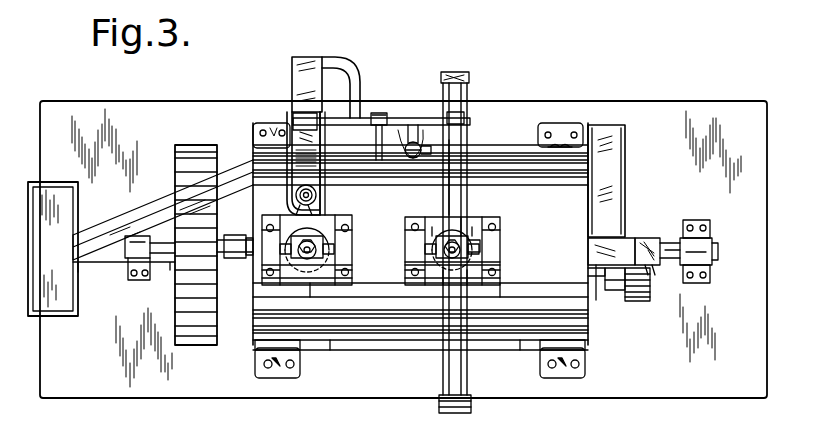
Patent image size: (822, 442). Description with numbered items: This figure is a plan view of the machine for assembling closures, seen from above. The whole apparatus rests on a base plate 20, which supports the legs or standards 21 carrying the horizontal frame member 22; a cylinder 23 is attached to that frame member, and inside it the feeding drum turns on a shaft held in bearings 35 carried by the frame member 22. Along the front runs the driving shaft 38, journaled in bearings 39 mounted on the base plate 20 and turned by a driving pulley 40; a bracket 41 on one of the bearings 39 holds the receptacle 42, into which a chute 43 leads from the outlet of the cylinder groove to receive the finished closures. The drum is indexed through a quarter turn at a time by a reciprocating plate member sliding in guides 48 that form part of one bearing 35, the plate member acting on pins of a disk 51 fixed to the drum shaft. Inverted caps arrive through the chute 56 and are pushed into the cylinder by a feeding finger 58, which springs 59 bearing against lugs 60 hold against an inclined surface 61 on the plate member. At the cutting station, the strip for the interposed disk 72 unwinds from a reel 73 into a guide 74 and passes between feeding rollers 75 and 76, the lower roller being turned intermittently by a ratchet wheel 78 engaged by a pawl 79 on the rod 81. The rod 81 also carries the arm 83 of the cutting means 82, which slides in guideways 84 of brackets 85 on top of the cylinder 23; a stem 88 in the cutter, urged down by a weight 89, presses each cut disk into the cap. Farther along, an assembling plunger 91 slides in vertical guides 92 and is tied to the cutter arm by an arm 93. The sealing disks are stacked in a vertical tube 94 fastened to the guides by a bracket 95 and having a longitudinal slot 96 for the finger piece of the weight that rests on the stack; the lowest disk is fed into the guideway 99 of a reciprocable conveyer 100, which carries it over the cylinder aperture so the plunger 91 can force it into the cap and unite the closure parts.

The base plate 20 is at (683, 390).
The legs or standards 21 is at (262, 364).
The horizontal frame member 22 is at (504, 148).
The cylinder 23 is at (375, 325).
The bearings 35 is at (236, 262).
The driving shaft 38 is at (672, 244).
The bearings 39 is at (139, 278).
The driving pulley 40 is at (203, 348).
The bracket 41 is at (115, 264).
The receptacle 42 is at (57, 195).
The chute 43 is at (118, 225).
The guides 48 is at (640, 302).
The disk 51 is at (616, 291).
The chute 56 is at (626, 158).
The feeding finger 58 is at (590, 248).
The springs 59 is at (590, 276).
The lugs 60 is at (598, 300).
The inclined surface 61 is at (651, 266).
The disk 72 is at (470, 268).
The reel 73 is at (472, 397).
The guide 74 is at (468, 197).
The feeding roller 75 is at (466, 135).
The feeding roller 76 is at (418, 140).
The ratchet wheel 78 is at (387, 120).
The pawl 79 is at (404, 140).
The rod 81 is at (378, 113).
The cutting means 82 is at (470, 238).
The arm 83 is at (446, 188).
The guideways 84 is at (425, 247).
The brackets 85 is at (433, 228).
The stem 88 is at (482, 246).
The weight 89 is at (430, 262).
The assembling plunger 91 is at (325, 237).
The vertical guides 92 is at (265, 222).
The arm 93 is at (256, 142).
The vertical tube 94 is at (306, 163).
The bracket 95 is at (298, 222).
The longitudinal slot 96 is at (317, 205).
The guideway 99 is at (322, 160).
The reciprocable conveyer 100 is at (292, 93).